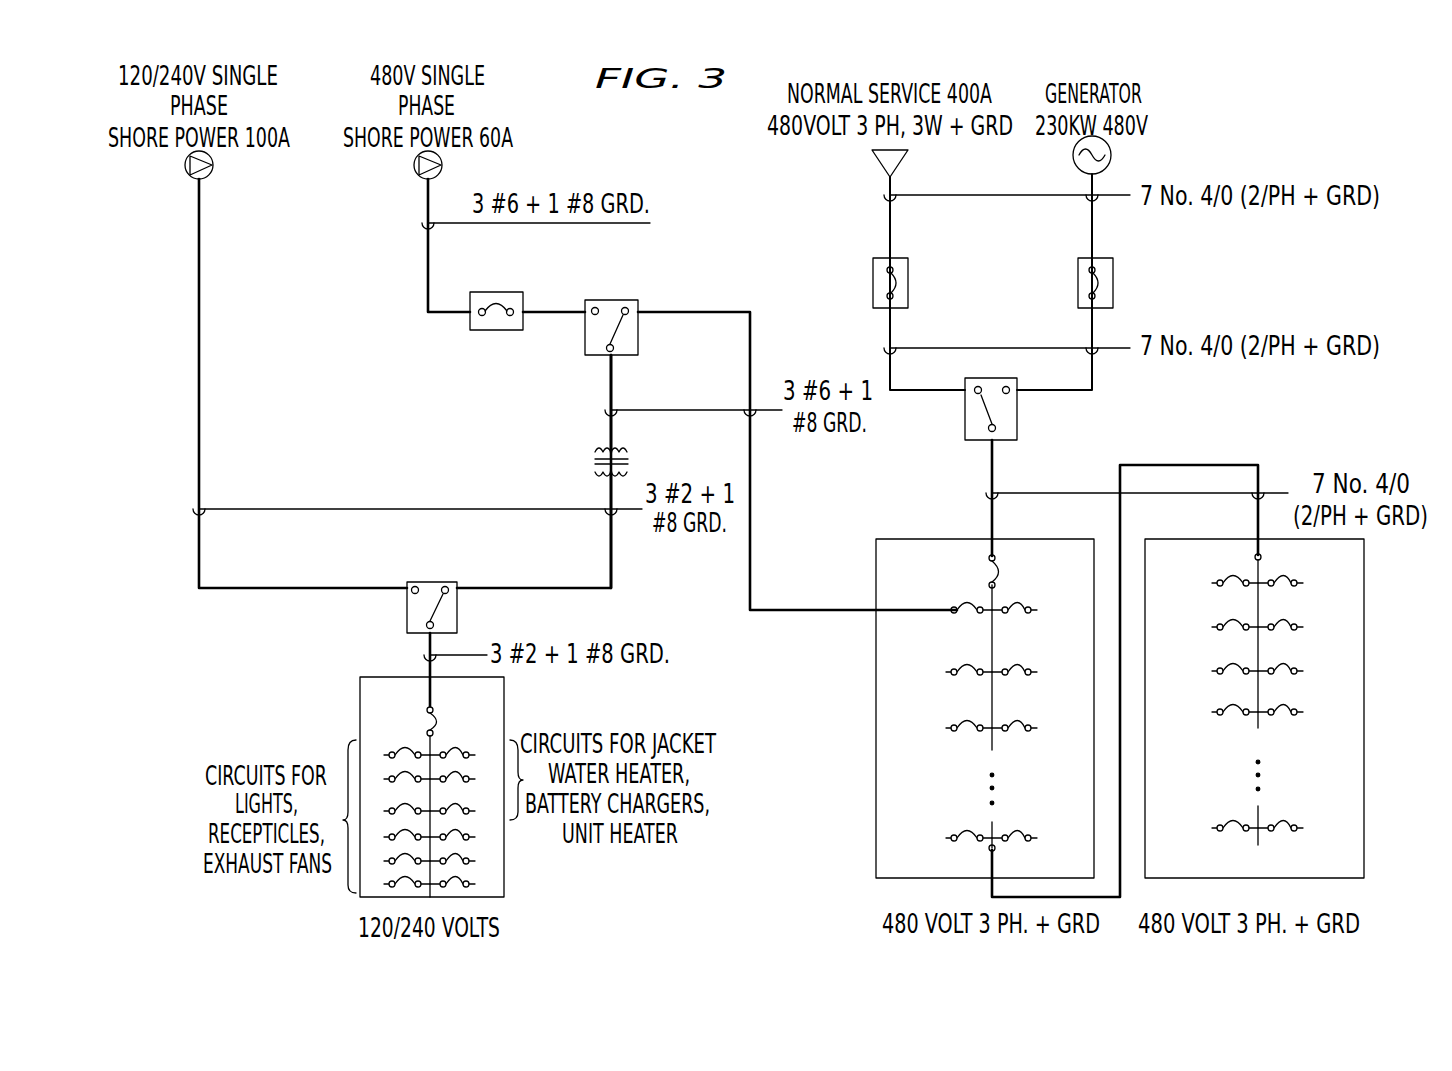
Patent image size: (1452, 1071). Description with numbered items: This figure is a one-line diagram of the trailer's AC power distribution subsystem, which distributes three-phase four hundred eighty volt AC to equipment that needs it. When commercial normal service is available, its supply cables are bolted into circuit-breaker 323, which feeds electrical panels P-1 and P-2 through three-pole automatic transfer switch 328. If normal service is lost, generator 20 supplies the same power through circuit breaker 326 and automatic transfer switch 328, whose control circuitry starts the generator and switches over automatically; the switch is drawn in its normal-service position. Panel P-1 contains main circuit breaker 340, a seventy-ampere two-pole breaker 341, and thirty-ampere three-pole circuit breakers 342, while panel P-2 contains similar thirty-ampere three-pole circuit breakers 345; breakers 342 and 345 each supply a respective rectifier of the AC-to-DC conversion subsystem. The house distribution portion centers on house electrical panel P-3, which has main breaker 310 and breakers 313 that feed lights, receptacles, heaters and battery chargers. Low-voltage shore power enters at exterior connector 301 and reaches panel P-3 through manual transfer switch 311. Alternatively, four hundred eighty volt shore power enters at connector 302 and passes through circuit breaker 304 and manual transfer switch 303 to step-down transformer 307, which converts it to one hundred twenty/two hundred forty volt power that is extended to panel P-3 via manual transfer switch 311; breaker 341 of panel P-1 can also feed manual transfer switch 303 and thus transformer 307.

The generator 20 is at (1112, 157).
The electrical power connector 301 is at (187, 171).
The connector 302 is at (416, 171).
The manual transfer switch 303 is at (640, 339).
The circuit breaker 304 is at (470, 326).
The step-down transformer 307 is at (629, 463).
The main breaker 310 is at (433, 704).
The manual transfer switch 311 is at (458, 616).
The breakers 313 is at (426, 725).
The circuit-breaker 323 is at (912, 262).
The circuit breaker 326 is at (1117, 262).
The automatic transfer switch 328 is at (972, 442).
The main circuit breaker 340 is at (1000, 573).
The breaker 341 is at (960, 606).
The 30A/3P circuit breakers 342 is at (965, 671).
The 30A/3P circuit breakers 345 is at (1291, 580).
The electrical panel P-1 is at (947, 708).
The electrical panel P-2 is at (1292, 708).
The house electrical panel P-3 is at (437, 784).